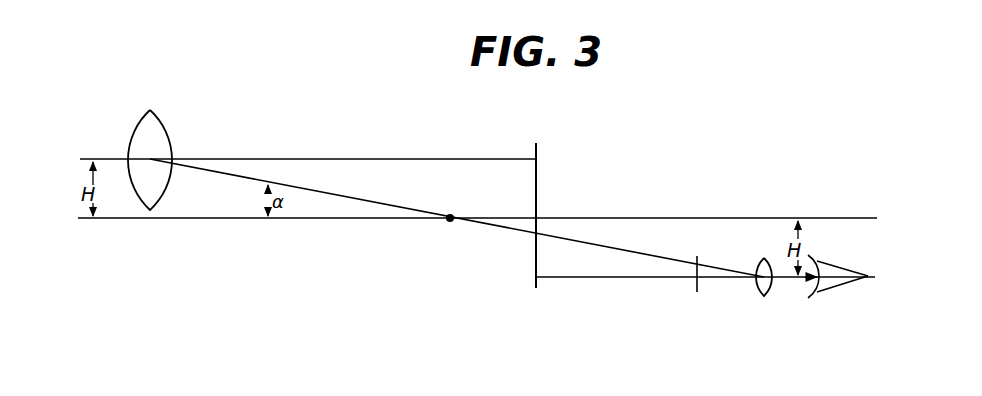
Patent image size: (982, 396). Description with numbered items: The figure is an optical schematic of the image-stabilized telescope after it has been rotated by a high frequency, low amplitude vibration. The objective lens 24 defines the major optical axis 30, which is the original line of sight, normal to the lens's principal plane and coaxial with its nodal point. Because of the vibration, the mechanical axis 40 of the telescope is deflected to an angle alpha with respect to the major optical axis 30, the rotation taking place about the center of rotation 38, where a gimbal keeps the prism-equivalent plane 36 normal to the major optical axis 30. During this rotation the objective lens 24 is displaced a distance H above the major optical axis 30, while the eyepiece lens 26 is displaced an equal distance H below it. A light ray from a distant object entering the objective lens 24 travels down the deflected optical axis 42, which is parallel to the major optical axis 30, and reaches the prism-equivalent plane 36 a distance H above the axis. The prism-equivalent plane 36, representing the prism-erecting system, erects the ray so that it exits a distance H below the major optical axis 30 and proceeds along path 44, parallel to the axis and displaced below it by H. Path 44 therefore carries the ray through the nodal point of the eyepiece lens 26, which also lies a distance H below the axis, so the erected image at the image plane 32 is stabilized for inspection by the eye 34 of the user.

The objective lens 24 is at (170, 140).
The eyepiece lens 26 is at (758, 296).
The major optical axis 30 is at (195, 218).
The image plane 32 is at (697, 290).
The eye 34 is at (835, 290).
The prism-equivalent plane 36 is at (537, 148).
The center of rotation 38 is at (449, 222).
The mechanical axis 40 is at (333, 197).
The deflected optical axis 42 is at (335, 158).
The path 44 is at (600, 279).